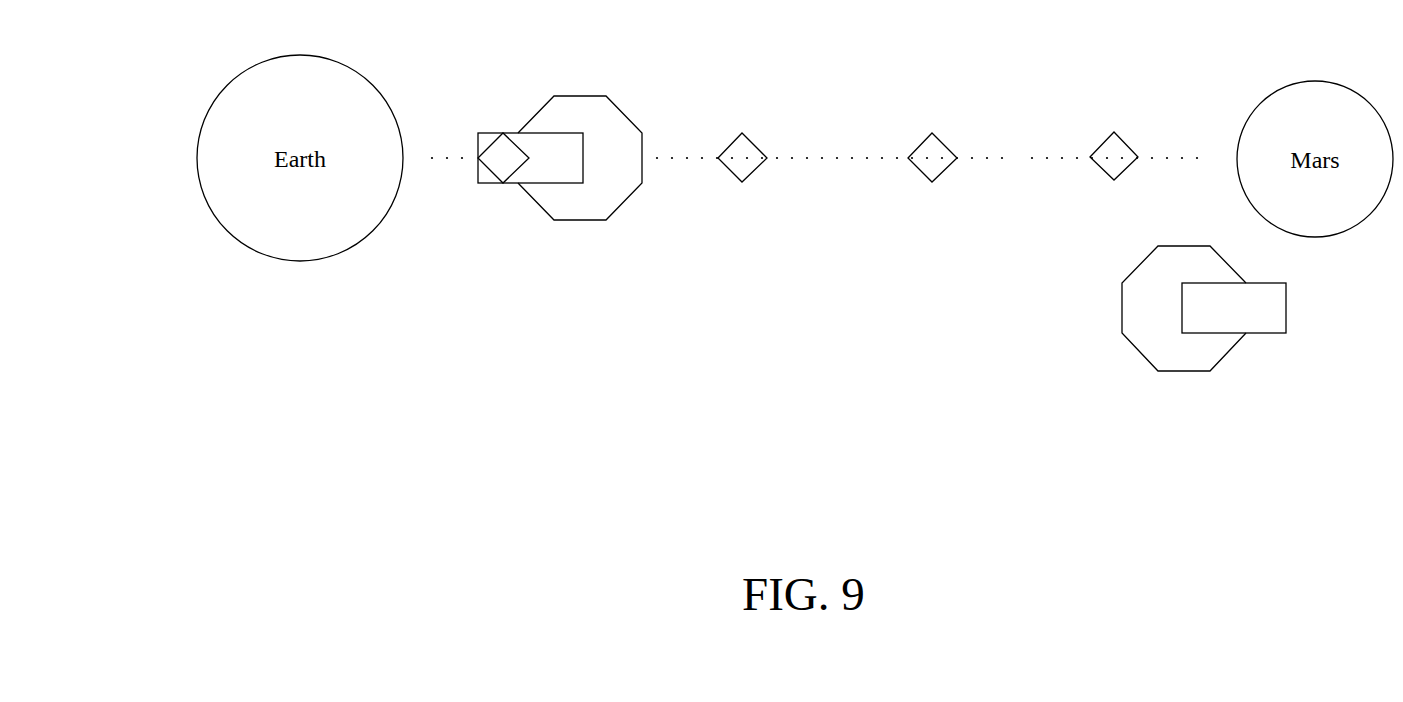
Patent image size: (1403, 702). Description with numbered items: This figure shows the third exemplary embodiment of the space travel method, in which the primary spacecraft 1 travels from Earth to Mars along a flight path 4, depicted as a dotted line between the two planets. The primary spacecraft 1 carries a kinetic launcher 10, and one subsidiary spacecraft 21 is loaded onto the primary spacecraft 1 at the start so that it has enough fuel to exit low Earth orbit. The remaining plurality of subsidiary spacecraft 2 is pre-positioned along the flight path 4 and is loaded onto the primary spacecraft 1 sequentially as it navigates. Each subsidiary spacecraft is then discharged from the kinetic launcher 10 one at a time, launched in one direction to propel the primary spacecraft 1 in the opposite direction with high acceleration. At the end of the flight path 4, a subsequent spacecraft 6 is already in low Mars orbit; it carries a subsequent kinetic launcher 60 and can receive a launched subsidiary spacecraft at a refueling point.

The primary spacecraft 1 is at (569, 98).
The kinetic launcher 10 is at (546, 173).
The subsidiary spacecraft 21 is at (505, 145).
The plurality of subsidiary spacecraft 2 is at (752, 173).
The flight path 4 is at (1017, 158).
The subsequent spacecraft 6 is at (1202, 255).
The subsequent kinetic launcher 60 is at (1224, 328).